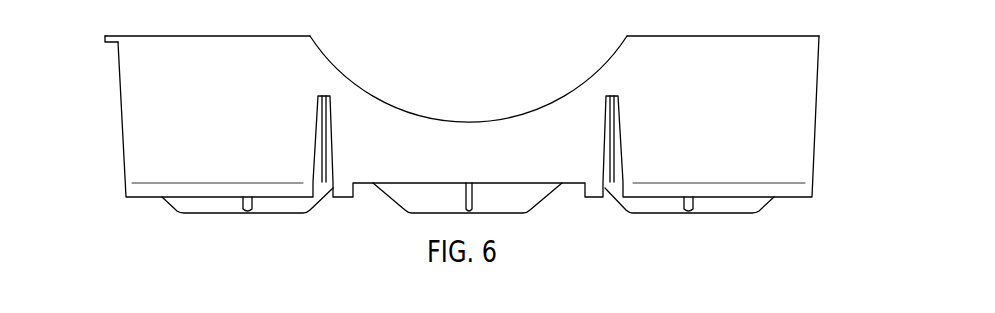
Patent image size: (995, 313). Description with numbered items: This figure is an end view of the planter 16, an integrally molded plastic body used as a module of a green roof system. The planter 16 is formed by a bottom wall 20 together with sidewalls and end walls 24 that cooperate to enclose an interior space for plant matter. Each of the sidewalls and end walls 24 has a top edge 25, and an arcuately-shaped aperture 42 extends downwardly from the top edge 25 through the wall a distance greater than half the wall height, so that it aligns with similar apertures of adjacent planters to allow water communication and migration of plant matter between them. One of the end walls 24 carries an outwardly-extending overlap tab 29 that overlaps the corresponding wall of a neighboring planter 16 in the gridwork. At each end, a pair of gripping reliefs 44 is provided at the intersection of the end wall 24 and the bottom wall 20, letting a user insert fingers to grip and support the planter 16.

The planter 16 is at (122, 150).
The top edge 25 is at (188, 36).
The overlap tab 29 is at (105, 38).
The arcuately-shaped aperture 42 is at (397, 108).
The bottom wall 20 is at (277, 215).
The gripping relief 44 is at (365, 208).
The end wall 24 is at (758, 165).